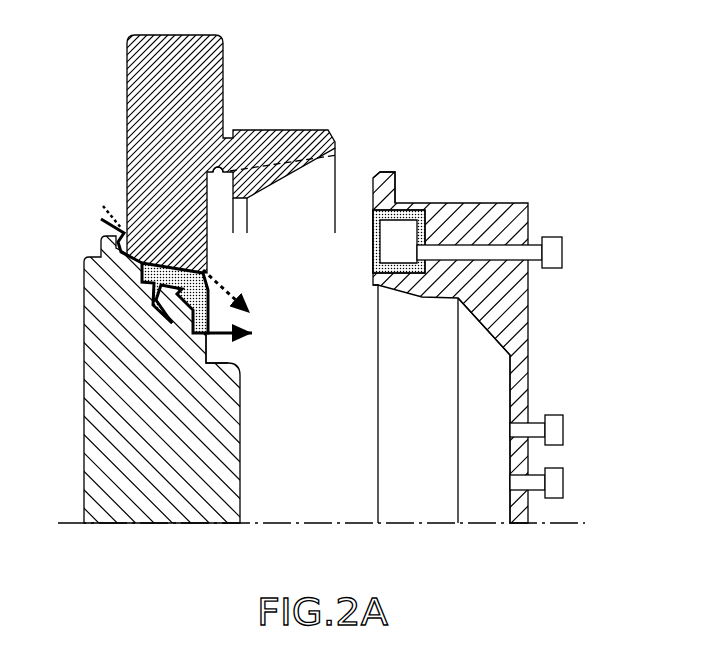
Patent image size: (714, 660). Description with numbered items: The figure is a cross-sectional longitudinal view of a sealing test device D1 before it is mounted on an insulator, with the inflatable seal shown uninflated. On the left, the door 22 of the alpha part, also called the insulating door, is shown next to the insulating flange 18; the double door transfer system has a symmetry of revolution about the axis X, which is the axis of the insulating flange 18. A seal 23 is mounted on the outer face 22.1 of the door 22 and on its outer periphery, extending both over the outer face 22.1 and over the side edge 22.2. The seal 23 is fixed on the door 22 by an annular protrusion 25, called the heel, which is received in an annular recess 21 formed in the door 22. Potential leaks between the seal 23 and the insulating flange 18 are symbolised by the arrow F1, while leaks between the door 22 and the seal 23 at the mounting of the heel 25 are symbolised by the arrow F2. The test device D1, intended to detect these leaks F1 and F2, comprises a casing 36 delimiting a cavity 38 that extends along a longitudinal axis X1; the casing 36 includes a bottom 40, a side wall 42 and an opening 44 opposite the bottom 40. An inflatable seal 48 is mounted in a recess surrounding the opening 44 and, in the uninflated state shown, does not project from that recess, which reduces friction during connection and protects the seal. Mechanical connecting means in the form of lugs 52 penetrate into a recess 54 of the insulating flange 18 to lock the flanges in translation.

The insulating flange 18 is at (251, 82).
The recess of the insulating flange 54 is at (228, 172).
The door 22 is at (132, 531).
The outer face 22.1 is at (208, 365).
The side edge 22.2 is at (143, 275).
The seal 23 is at (104, 207).
The annular protrusion 25 is at (160, 295).
The annular recess 21 is at (160, 318).
The casing 36 is at (513, 211).
The lugs 52 is at (396, 182).
The inflatable seal 48 is at (429, 217).
The side wall 42 is at (488, 212).
The opening 44 is at (378, 287).
The bottom 40 is at (513, 325).
The cavity 38 is at (488, 403).
The leak between seal and insulating flange F1 is at (213, 280).
The leak between door and seal F2 is at (224, 320).
The test device D1 is at (550, 355).
The axis X is at (70, 524).
The longitudinal axis X1 is at (563, 524).